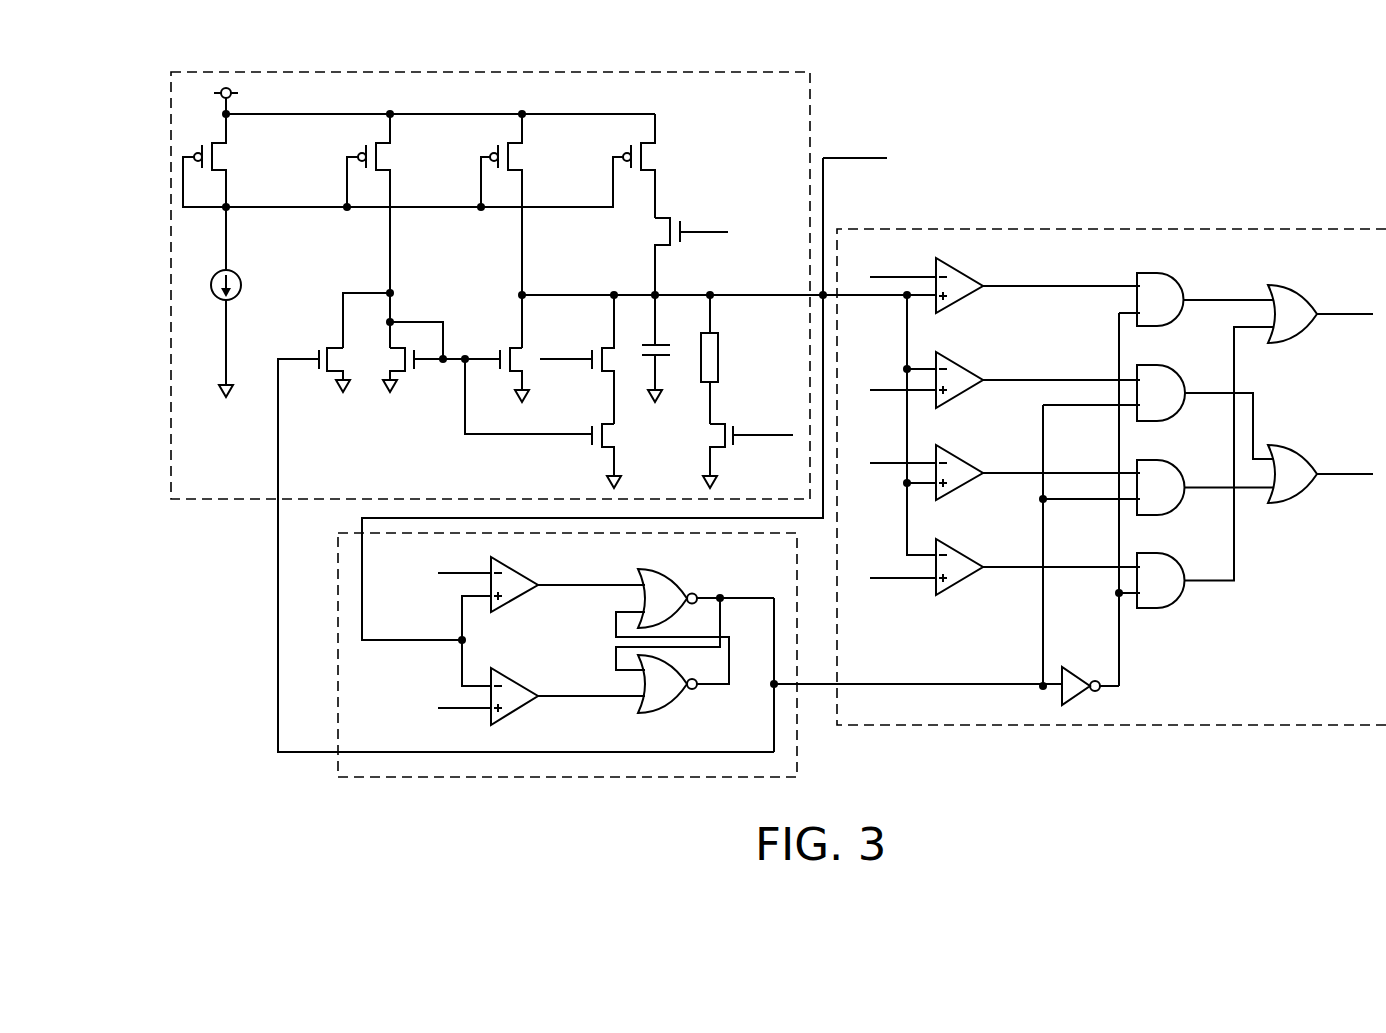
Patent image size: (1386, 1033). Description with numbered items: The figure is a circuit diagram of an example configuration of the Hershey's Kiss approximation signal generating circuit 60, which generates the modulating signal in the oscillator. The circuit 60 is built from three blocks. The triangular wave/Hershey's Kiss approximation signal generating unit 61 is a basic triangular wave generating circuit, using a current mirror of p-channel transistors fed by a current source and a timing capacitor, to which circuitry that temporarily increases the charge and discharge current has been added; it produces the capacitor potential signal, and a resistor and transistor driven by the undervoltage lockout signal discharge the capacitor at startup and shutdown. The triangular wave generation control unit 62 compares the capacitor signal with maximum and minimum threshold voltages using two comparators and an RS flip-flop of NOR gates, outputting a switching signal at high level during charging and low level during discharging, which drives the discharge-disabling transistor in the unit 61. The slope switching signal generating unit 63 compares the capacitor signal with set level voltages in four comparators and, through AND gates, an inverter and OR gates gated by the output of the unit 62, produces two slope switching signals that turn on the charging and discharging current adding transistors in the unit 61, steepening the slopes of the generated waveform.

The Hershey's Kiss approximation signal generating circuit 60 is at (1280, 72).
The triangular wave/Hershey's Kiss approximation signal generating unit 61 is at (452, 73).
The triangular wave generation control unit 62 is at (797, 752).
The slope switching signal generating unit 63 is at (1290, 229).